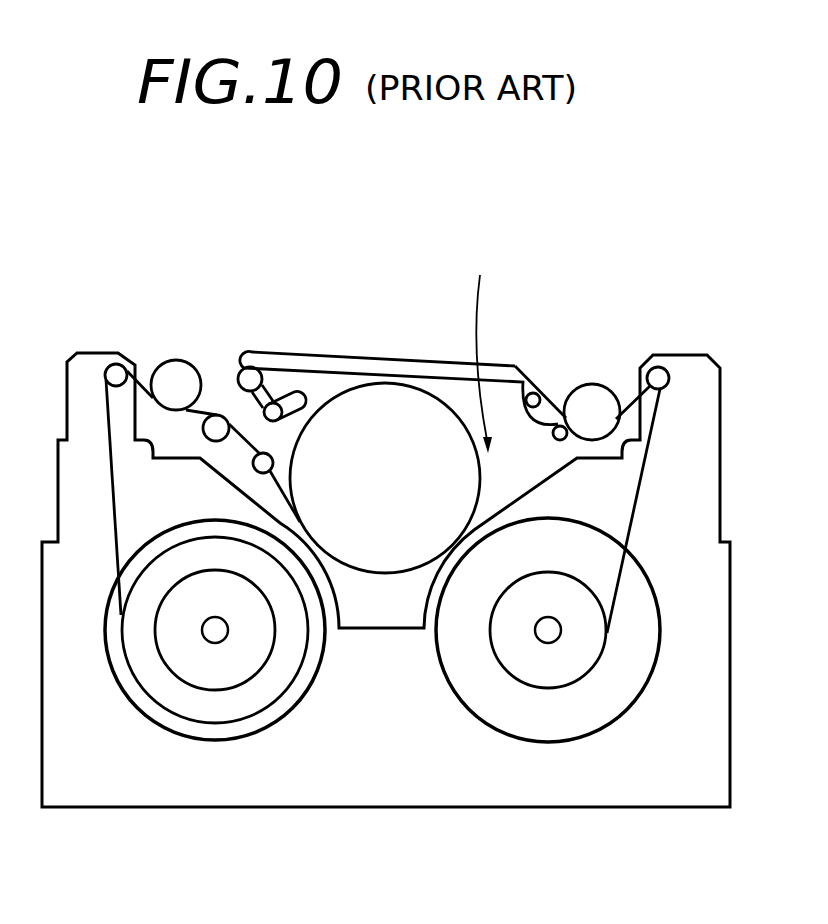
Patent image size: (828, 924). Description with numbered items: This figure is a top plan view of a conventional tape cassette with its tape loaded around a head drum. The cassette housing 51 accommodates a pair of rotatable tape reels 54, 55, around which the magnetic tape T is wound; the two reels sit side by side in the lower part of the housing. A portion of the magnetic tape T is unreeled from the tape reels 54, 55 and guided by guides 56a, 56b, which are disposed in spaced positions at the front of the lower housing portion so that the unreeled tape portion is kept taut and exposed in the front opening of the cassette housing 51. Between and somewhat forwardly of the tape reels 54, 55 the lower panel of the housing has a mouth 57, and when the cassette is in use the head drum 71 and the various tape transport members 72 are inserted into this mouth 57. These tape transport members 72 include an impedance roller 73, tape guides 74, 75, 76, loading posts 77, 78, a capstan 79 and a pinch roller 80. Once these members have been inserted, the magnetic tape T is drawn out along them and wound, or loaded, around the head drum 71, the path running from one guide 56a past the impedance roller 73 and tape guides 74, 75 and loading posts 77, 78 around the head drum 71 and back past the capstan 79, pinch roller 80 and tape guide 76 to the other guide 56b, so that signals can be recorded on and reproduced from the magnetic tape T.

The cassette housing 51 is at (105, 807).
The tape reel 54 is at (217, 742).
The tape reel 55 is at (552, 744).
The guide 56a is at (113, 366).
The guide 56b is at (662, 373).
The mouth 57 is at (484, 346).
The head drum 71 is at (420, 413).
The tape transport members 72 is at (266, 340).
The impedance roller 73 is at (172, 372).
The tape guide 74 is at (215, 422).
The tape guide 75 is at (260, 455).
The tape guide 76 is at (542, 380).
The loading post 77 is at (282, 398).
The loading post 78 is at (262, 370).
The capstan 79 is at (528, 393).
The pinch roller 80 is at (597, 400).
The magnetic tape T is at (383, 366).